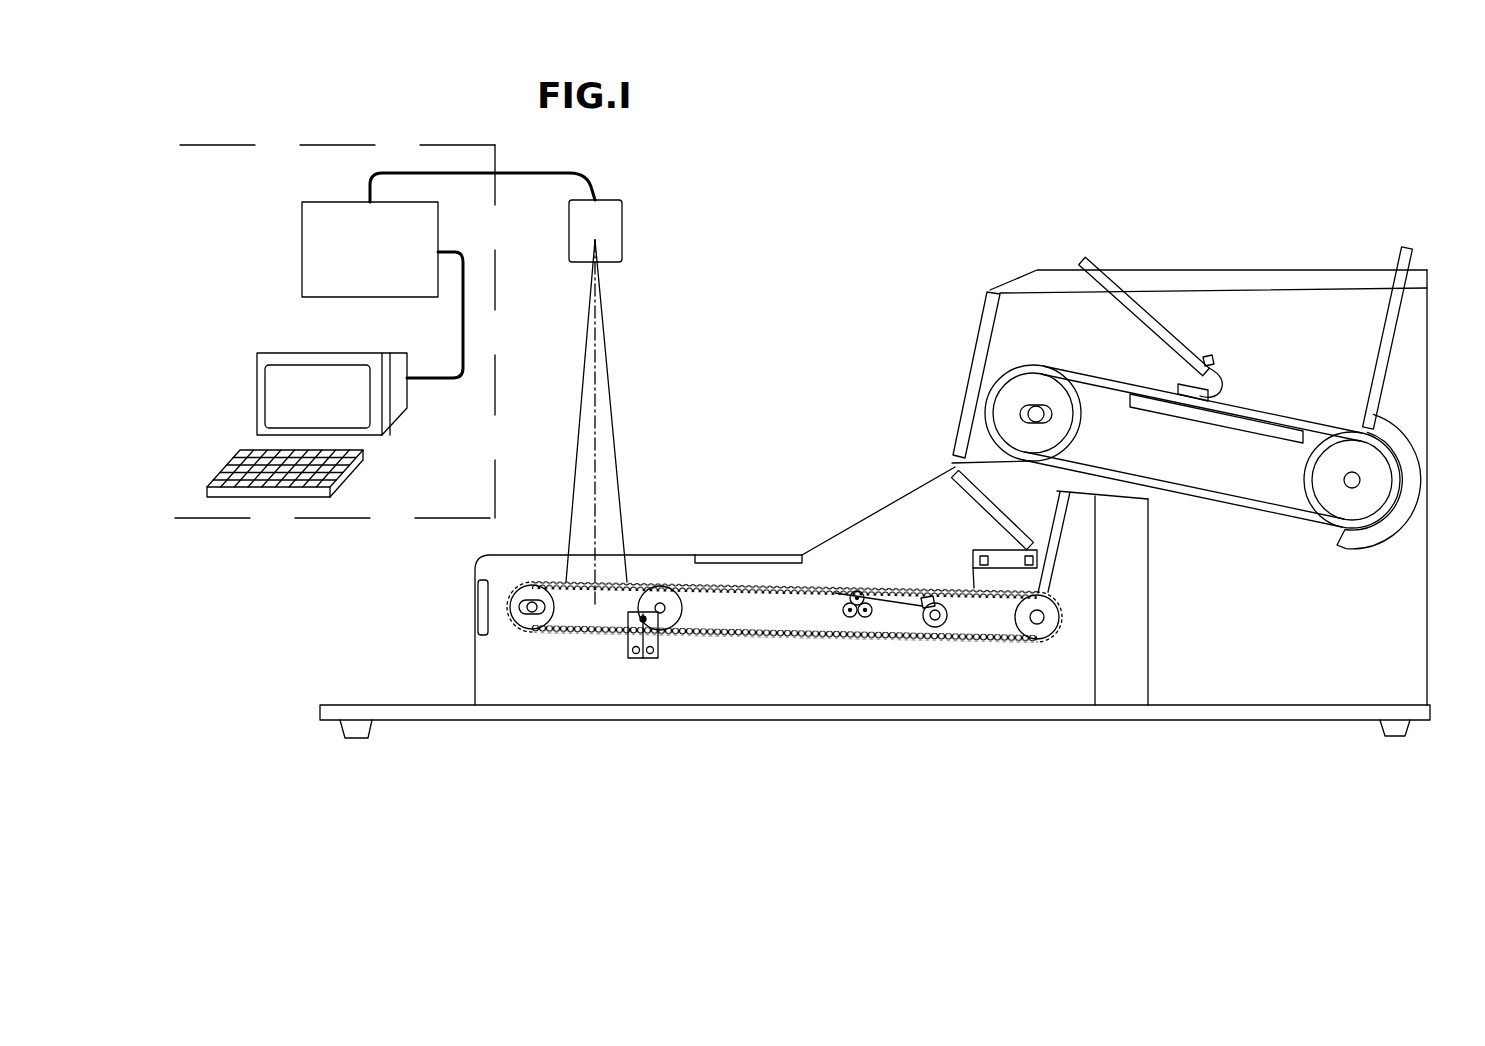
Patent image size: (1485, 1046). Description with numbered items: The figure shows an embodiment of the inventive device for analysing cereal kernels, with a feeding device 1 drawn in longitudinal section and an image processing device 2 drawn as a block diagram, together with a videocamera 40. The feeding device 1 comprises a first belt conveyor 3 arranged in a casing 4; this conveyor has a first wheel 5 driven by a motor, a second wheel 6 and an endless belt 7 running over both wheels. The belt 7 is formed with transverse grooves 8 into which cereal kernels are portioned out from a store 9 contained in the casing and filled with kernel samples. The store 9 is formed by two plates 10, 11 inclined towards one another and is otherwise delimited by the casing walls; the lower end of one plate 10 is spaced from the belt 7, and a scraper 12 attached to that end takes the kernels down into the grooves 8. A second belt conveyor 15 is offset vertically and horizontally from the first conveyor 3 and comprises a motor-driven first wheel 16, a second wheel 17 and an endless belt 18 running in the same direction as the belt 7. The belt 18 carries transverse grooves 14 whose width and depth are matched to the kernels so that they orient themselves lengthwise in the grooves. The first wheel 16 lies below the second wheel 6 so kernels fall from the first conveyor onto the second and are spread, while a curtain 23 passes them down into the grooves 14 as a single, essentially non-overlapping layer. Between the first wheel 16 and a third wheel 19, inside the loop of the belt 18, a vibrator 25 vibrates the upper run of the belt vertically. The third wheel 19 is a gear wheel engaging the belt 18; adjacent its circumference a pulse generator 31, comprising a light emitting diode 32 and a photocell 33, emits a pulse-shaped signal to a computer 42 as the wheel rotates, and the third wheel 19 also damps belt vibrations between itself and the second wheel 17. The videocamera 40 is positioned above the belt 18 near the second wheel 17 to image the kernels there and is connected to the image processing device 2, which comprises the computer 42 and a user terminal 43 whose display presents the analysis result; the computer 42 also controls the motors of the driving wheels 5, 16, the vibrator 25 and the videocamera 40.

The feeding device 1 is at (850, 378).
The image processing device 2 is at (282, 540).
The first belt conveyor 3 is at (1232, 545).
The casing 4 is at (977, 315).
The first wheel 5 is at (1360, 503).
The second wheel 6 is at (1030, 442).
The endless belt 7 is at (1285, 423).
The transverse grooves 8 is at (1107, 378).
The store 9 is at (1253, 260).
The plate 10 is at (1403, 248).
The plate 11 is at (1097, 277).
The scraper 12 is at (1220, 370).
The transverse grooves 14 is at (608, 582).
The second belt conveyor 15 is at (950, 695).
The first wheel 16 is at (1033, 628).
The second wheel 17 is at (532, 620).
The endless belt 18 is at (577, 582).
The third wheel 19 is at (672, 618).
The curtain 23 is at (972, 585).
The vibrator 25 is at (893, 617).
The pulse generator 31 is at (635, 637).
The light emitting diode 32 is at (643, 617).
The photocell 33 is at (645, 620).
The videocamera 40 is at (613, 242).
The computer 42 is at (325, 266).
The user terminal 43 is at (293, 433).